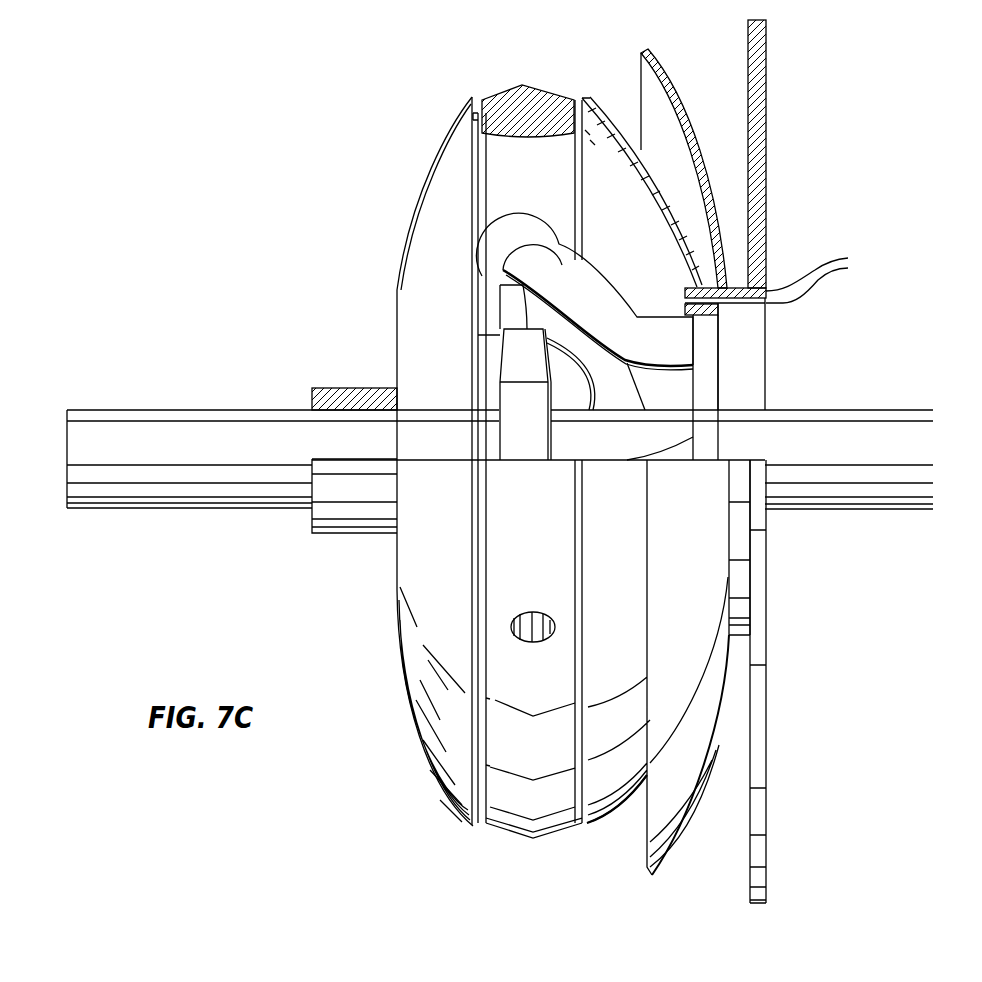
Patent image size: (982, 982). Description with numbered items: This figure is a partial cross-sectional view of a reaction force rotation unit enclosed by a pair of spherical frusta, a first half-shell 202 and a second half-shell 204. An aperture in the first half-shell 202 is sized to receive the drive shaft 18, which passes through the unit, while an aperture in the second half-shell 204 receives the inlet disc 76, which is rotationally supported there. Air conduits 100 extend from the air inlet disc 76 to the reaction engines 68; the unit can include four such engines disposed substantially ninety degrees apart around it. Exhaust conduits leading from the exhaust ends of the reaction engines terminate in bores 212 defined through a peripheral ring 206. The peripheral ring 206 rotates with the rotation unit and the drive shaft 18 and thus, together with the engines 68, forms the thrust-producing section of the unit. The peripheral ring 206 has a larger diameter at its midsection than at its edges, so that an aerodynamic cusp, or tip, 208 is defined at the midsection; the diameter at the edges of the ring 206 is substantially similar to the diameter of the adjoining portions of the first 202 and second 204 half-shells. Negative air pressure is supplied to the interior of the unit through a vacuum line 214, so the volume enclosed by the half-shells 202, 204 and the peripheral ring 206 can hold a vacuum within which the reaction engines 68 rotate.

The drive shaft 18 is at (207, 428).
The reaction engine 68 is at (532, 434).
The inlet disc 76 is at (714, 404).
The air conduit 100 is at (686, 355).
The first half-shell 202 is at (438, 147).
The second half-shell 204 is at (592, 110).
The peripheral ring 206 is at (555, 105).
The aerodynamic cusp 208 is at (524, 84).
The bore 212 is at (548, 612).
The vacuum line 214 is at (826, 258).